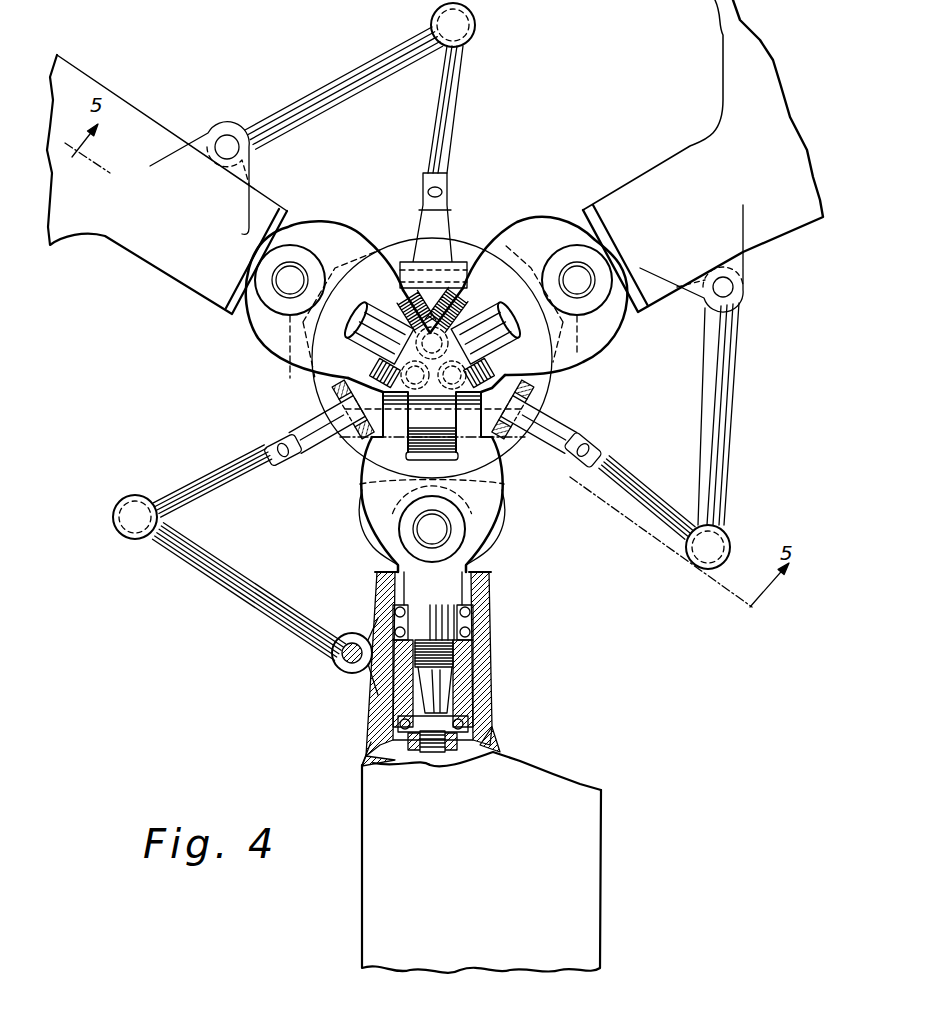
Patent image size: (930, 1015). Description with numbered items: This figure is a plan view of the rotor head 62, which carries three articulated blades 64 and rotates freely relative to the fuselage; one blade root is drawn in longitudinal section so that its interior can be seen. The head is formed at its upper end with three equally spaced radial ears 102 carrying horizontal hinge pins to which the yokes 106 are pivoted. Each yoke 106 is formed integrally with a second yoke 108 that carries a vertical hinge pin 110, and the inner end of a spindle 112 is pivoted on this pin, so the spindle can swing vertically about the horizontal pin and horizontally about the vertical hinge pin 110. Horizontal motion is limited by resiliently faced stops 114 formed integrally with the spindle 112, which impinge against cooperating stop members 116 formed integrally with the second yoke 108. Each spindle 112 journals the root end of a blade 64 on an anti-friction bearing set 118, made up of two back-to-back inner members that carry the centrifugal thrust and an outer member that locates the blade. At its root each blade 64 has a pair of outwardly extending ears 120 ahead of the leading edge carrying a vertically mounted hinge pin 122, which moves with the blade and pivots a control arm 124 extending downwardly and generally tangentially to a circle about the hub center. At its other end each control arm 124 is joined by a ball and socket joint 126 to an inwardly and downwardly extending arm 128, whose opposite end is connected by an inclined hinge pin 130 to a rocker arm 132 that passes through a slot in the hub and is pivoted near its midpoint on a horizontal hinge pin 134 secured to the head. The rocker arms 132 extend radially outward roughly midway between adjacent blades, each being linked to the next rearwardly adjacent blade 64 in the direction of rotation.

The rotor head 62 is at (492, 208).
The blade 64 is at (163, 209).
The radial ear 102 is at (490, 447).
The yoke 106 is at (333, 380).
The second yoke 108 is at (440, 530).
The vertical hinge pin 110 is at (443, 583).
The spindle 112 is at (483, 602).
The resiliently faced stop 114 is at (390, 514).
The stop member 116 is at (362, 484).
The anti-friction bearing set 118 is at (472, 630).
The outwardly extending ear 120 is at (380, 668).
The hinge pin 122 is at (345, 662).
The control arm 124 is at (255, 598).
The ball and socket joint 126 is at (130, 530).
The inwardly and downwardly extending arm 128 is at (217, 480).
The hinge pin 130 is at (273, 470).
The rocker arm 132 is at (362, 432).
The horizontal hinge pin 134 is at (338, 395).